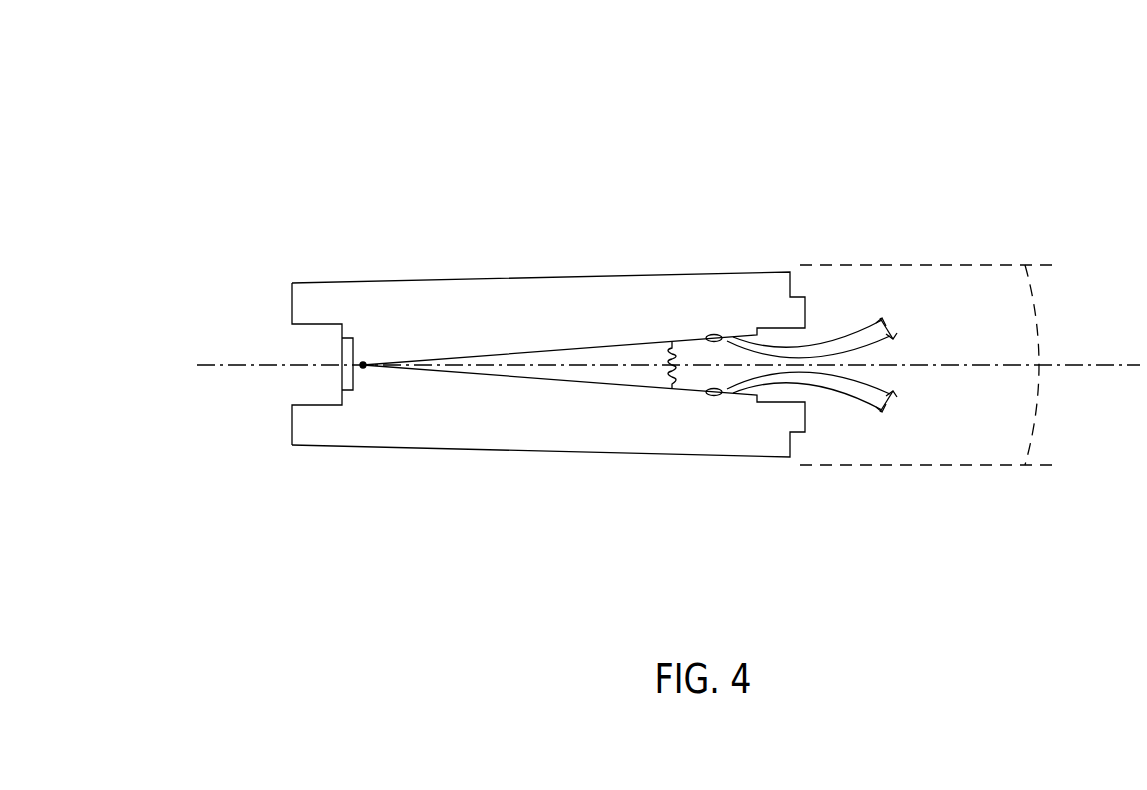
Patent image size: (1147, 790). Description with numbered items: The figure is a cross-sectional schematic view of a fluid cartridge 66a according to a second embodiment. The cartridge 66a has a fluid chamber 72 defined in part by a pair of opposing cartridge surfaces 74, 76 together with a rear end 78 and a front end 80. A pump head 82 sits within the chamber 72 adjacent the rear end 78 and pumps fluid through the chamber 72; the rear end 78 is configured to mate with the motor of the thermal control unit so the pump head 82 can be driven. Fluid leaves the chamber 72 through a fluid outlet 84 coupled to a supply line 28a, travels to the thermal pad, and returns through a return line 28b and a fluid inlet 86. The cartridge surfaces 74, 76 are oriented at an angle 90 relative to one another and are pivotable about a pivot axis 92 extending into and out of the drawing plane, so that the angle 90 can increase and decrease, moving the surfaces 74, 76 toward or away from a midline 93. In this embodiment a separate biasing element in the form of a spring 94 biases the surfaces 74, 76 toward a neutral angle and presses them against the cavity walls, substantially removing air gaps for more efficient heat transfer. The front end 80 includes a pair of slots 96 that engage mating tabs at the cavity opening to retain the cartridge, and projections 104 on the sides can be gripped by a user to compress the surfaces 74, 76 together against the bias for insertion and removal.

The cartridge 66a is at (883, 126).
The fluid chamber 72 is at (548, 366).
The cartridge surface 74 is at (486, 278).
The cartridge surface 76 is at (625, 457).
The rear end 78 is at (292, 305).
The front end 80 is at (807, 413).
The pump head 82 is at (353, 348).
The fluid outlet 84 is at (701, 336).
The fluid inlet 86 is at (710, 396).
The angle 90 is at (1046, 340).
The pivot axis 92 is at (366, 362).
The midline 93 is at (240, 366).
The spring 94 is at (667, 342).
The slots 96 is at (789, 278).
The projections 104 is at (806, 320).
The supply line 28a is at (833, 349).
The return line 28b is at (870, 396).